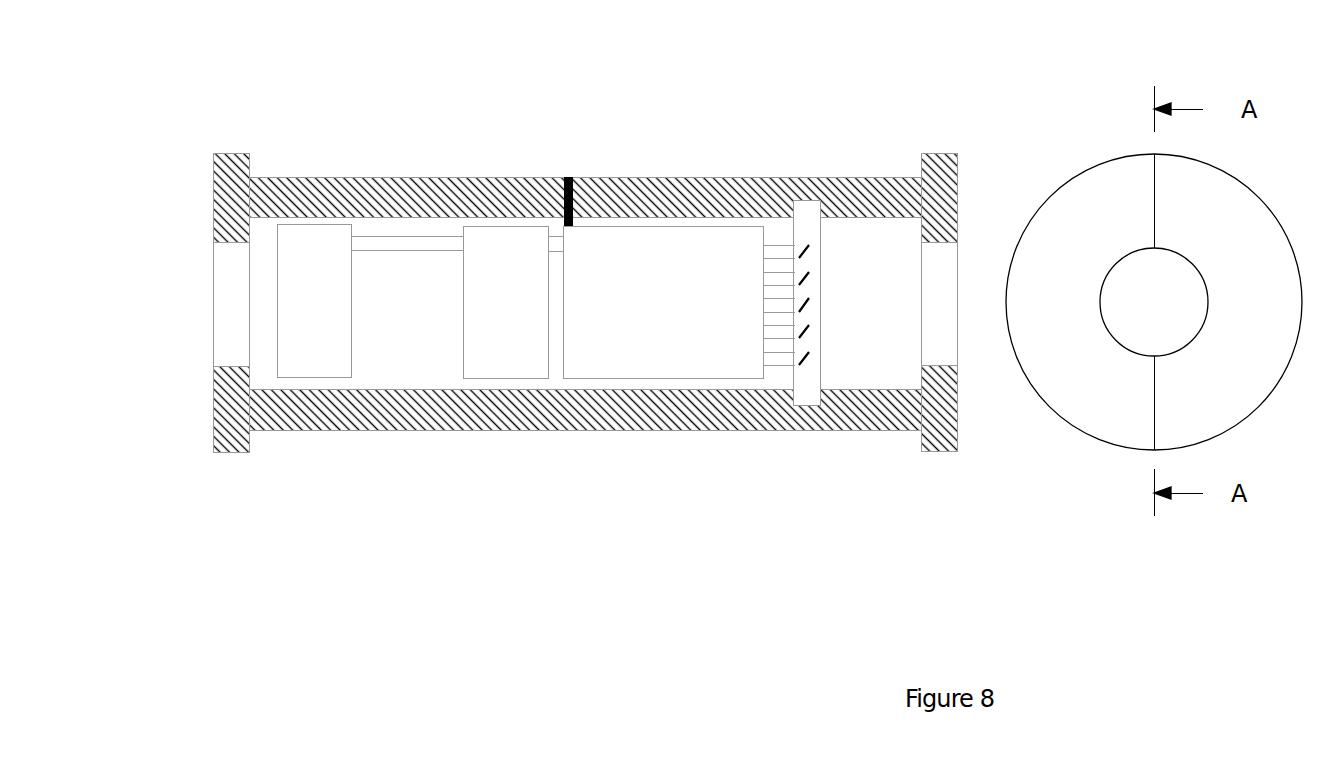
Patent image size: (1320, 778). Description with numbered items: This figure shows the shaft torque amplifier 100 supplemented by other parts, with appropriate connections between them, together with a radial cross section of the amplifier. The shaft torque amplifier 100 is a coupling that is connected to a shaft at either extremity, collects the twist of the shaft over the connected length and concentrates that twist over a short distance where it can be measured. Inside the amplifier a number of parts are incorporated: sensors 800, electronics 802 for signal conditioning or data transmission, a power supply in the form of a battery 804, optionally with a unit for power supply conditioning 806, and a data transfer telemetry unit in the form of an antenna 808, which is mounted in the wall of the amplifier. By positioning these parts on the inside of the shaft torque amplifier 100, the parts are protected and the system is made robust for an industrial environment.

The shaft torque amplifier 100 is at (300, 185).
The sensors 800 is at (809, 252).
The electronics 802 is at (713, 259).
The battery 804 is at (523, 349).
The unit for power supply conditioning 806 is at (318, 252).
The antenna 808 is at (567, 177).